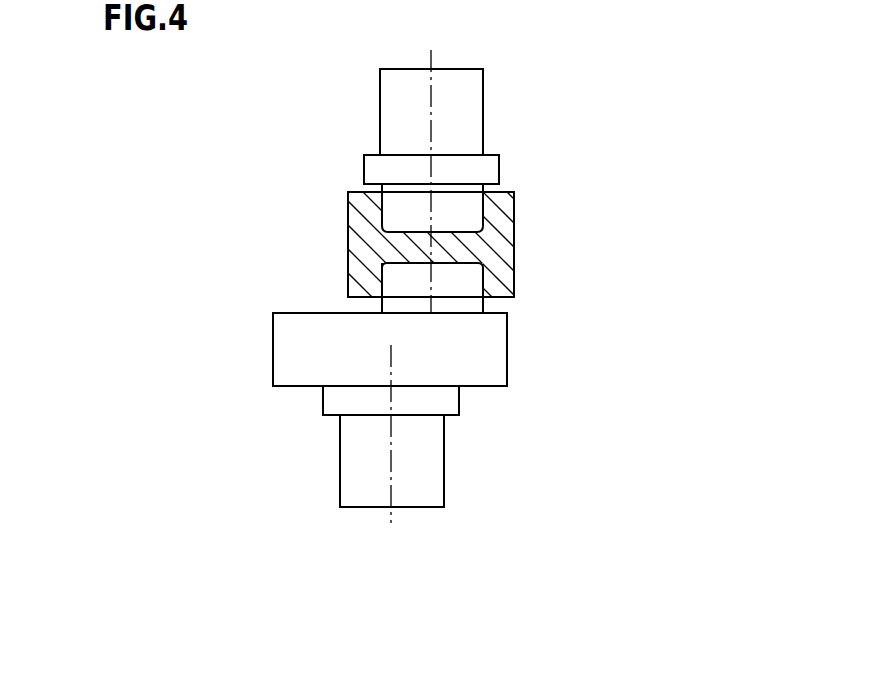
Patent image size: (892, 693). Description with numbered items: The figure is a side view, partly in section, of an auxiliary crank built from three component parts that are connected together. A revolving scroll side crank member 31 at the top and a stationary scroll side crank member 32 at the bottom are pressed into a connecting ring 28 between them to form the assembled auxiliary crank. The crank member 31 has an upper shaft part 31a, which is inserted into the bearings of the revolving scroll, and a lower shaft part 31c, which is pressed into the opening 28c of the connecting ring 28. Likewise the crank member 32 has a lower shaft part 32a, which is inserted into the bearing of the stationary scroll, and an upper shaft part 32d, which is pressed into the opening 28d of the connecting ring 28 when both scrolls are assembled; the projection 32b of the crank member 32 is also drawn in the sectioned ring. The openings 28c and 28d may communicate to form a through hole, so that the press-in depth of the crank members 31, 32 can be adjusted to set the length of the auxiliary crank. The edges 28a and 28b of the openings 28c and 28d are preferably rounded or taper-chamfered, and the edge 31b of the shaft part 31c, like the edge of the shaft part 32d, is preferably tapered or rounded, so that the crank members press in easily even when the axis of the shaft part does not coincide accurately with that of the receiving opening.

The connecting ring 28 is at (512, 246).
The edge of opening 28c 28a is at (387, 206).
The edge of opening 28d 28b is at (385, 299).
The opening 28c is at (387, 215).
The opening 28d is at (387, 280).
The revolving scroll side crank member 31 is at (468, 100).
The shaft part 31a is at (483, 135).
The edge of shaft part 31c 31b is at (486, 231).
The shaft part 31c is at (485, 218).
The stationary scroll side crank member 32 is at (490, 350).
The shaft part 32a is at (444, 465).
The projection of lower fitting member 32b is at (483, 267).
The shaft part 32d is at (483, 295).